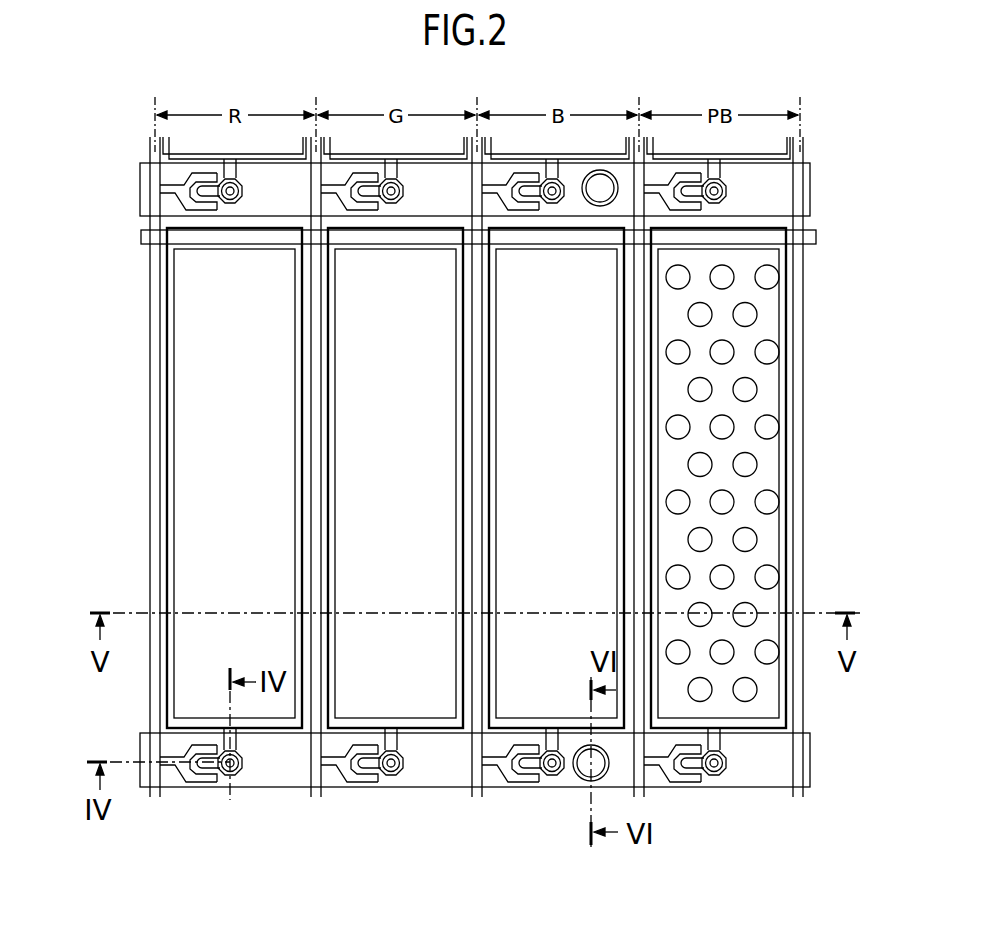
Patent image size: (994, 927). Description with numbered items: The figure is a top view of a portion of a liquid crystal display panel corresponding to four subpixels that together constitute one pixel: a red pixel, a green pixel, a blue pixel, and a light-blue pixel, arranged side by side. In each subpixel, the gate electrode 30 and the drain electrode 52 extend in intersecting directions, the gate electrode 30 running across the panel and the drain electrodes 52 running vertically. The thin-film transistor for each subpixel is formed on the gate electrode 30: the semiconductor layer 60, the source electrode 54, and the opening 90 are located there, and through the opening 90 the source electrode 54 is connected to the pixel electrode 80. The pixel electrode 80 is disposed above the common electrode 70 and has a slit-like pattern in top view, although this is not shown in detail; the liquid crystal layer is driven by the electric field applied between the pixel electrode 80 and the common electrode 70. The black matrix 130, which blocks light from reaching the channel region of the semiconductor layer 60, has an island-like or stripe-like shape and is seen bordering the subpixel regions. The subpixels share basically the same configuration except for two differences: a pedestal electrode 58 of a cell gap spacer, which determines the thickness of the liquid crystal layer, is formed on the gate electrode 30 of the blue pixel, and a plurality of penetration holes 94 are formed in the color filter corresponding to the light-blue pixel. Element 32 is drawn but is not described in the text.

The gate electrode 30 is at (141, 190).
The cross bar 32 is at (141, 236).
The drain electrode 52 is at (152, 797).
The source electrode 54 is at (233, 771).
The pedestal electrode 58 is at (578, 774).
The semiconductor layer 60 is at (221, 777).
The common electrode 70 is at (166, 691).
The pixel electrode 80 is at (243, 763).
The opening 90 is at (228, 777).
The penetration holes 94 is at (745, 698).
The black matrix 130 is at (174, 453).